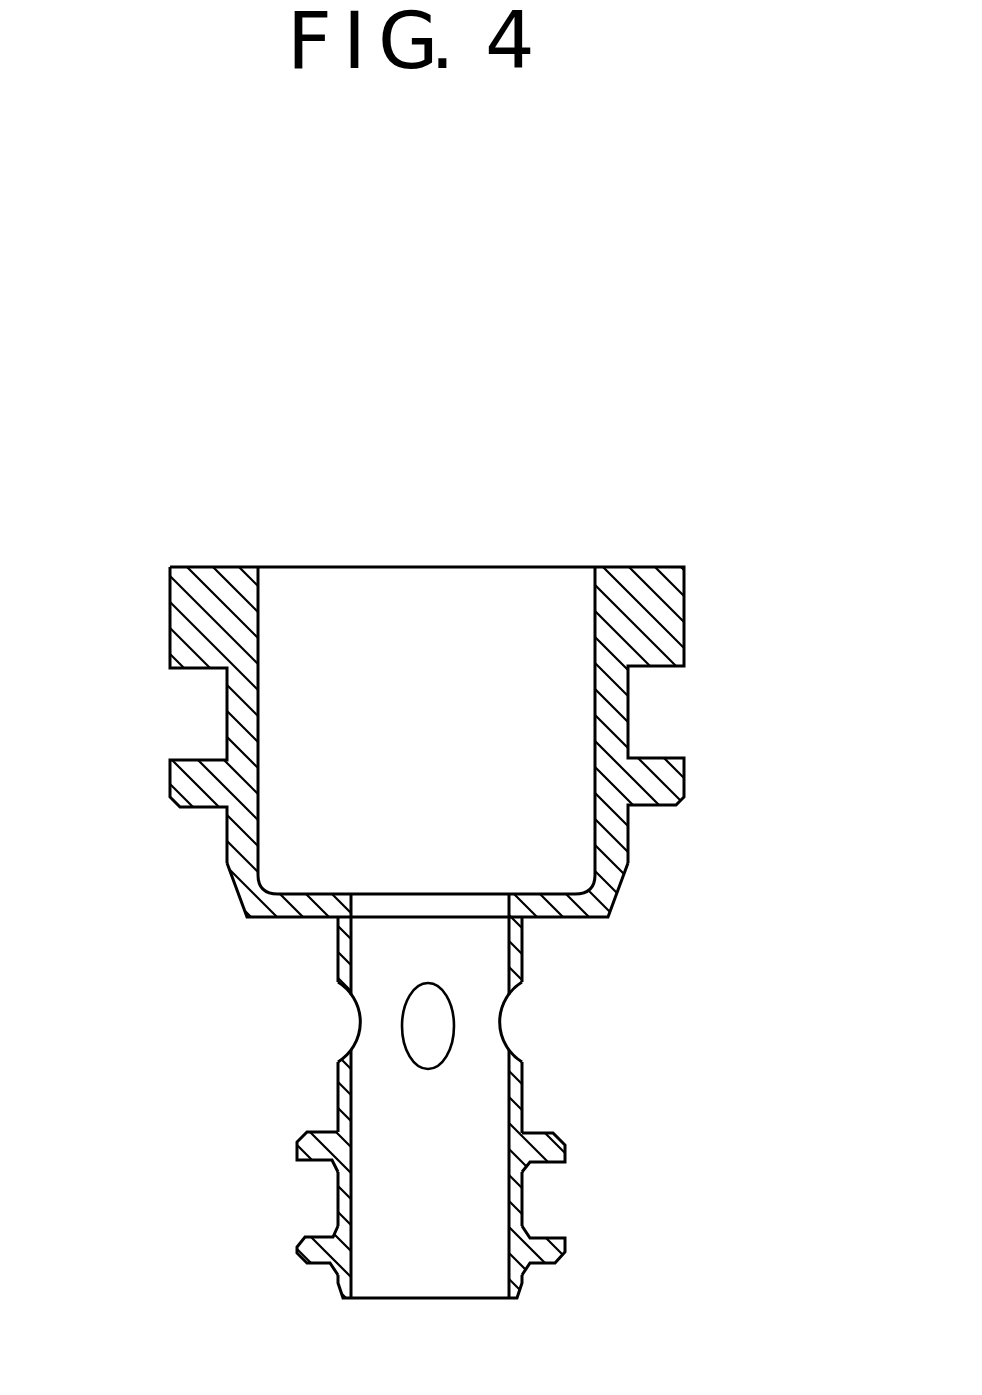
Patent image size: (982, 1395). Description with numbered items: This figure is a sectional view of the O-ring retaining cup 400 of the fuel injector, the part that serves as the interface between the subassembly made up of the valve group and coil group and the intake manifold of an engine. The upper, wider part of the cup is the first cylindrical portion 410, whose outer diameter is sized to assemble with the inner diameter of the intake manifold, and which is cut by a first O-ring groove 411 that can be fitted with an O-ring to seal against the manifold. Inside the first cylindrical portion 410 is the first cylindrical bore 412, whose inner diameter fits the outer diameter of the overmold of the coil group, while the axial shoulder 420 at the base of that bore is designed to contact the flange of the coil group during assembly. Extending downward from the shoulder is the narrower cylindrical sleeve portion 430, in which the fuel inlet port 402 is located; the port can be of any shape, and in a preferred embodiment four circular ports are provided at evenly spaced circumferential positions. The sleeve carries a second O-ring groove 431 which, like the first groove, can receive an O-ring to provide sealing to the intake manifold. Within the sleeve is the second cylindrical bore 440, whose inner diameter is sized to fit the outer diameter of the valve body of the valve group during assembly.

The O-ring retaining cup 400 is at (491, 900).
The fuel inlet port 402 is at (505, 1023).
The first cylindrical portion 410 is at (177, 627).
The first O-ring groove 411 is at (227, 735).
The first cylindrical bore 412 is at (258, 598).
The axial shoulder 420 is at (295, 890).
The cylindrical sleeve portion 430 is at (522, 1100).
The second O-ring groove 431 is at (525, 1202).
The second cylindrical bore 440 is at (352, 1122).